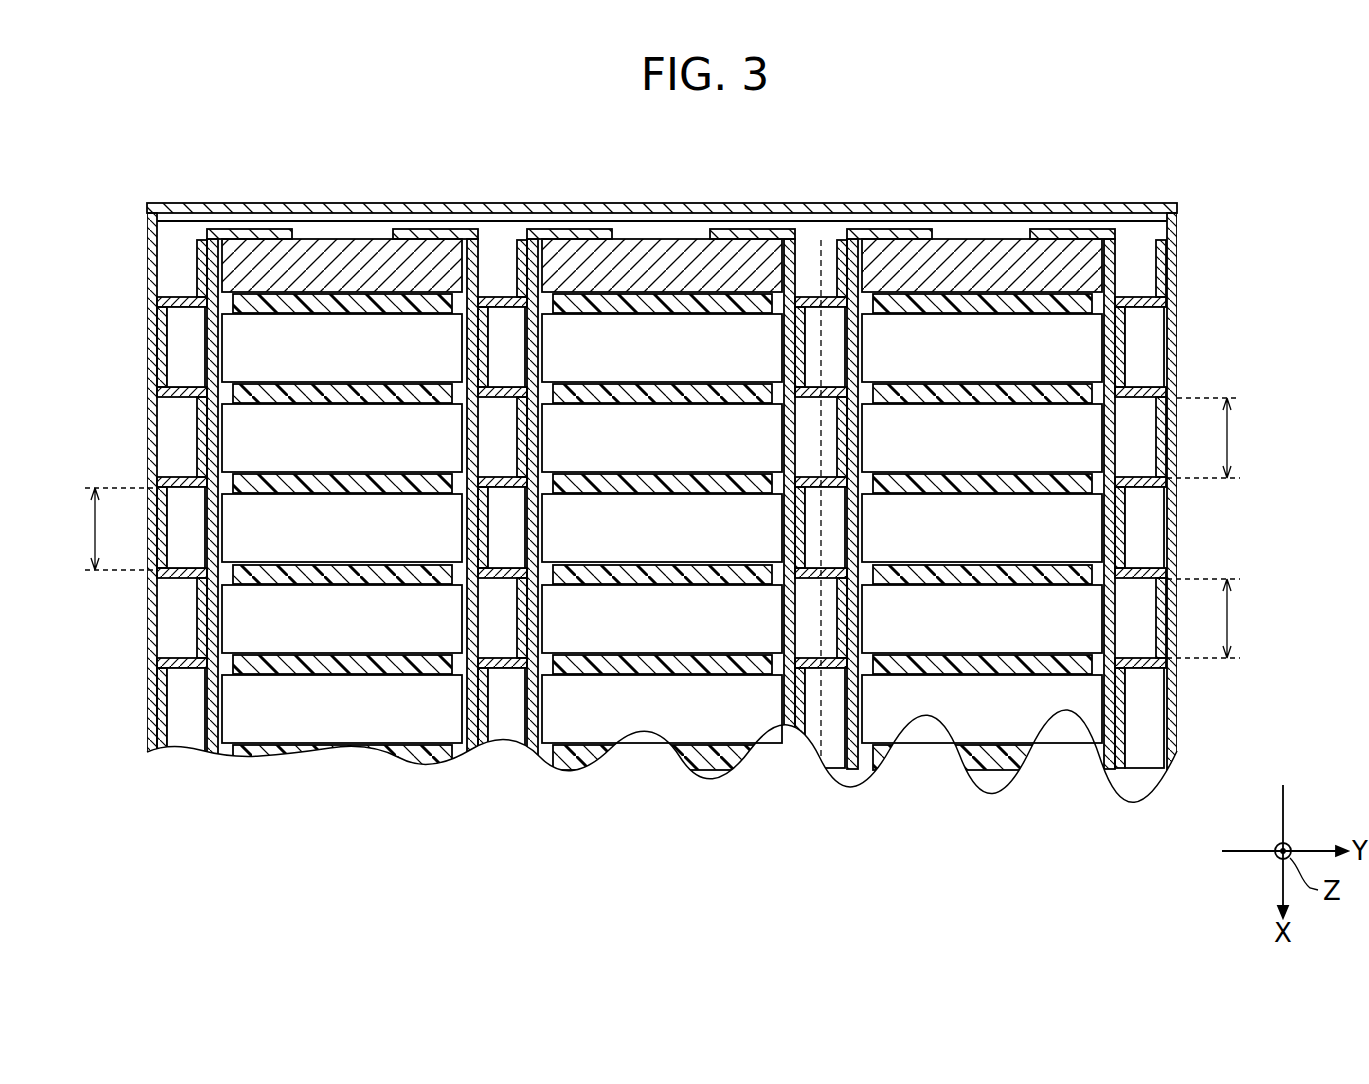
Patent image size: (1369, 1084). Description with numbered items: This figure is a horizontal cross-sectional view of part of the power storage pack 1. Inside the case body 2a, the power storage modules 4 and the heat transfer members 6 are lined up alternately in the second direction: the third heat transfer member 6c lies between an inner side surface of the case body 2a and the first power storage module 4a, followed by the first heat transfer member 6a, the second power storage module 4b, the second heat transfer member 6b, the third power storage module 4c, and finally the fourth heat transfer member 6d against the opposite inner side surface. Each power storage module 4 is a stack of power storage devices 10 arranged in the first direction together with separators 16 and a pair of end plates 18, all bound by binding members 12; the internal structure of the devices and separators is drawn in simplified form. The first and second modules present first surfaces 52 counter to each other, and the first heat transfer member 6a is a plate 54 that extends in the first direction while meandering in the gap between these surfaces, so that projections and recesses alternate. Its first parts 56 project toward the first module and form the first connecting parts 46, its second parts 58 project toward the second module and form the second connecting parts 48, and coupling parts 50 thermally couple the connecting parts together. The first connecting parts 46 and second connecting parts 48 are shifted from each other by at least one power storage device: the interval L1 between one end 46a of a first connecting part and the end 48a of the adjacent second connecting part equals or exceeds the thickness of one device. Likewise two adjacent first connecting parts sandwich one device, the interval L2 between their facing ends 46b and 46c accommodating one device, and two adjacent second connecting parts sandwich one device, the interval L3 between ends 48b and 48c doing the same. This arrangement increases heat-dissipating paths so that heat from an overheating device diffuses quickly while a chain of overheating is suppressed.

The power storage pack 1 is at (660, 522).
The case body 2a is at (1178, 738).
The power storage module 4 is at (721, 483).
The first power storage module 4a is at (338, 768).
The second power storage module 4b is at (837, 481).
The third power storage module 4c is at (978, 771).
The heat transfer member 6 is at (660, 487).
The first heat transfer member 6a is at (770, 545).
The second heat transfer member 6b is at (829, 500).
The third heat transfer member 6c is at (586, 487).
The fourth heat transfer member 6d is at (1158, 545).
The power storage device 10 is at (690, 330).
The binding member 12 is at (775, 242).
The separator 16 is at (665, 300).
The end plate 18 is at (630, 240).
The first connecting part 46 is at (536, 355).
The end of first connecting part 46a is at (1128, 495).
The end of first connecting part 46b is at (1140, 537).
The end of first connecting part 46c is at (1140, 693).
The second connecting part 48 is at (197, 433).
The end of second connecting part 48a is at (1143, 420).
The end of second connecting part 48b is at (197, 470).
The end of second connecting part 48c is at (197, 600).
The coupling part 50 is at (492, 318).
The first surface 52 is at (480, 240).
The plate 54 is at (836, 300).
The first part 56 is at (792, 290).
The second part 58 is at (835, 308).
The interval L1 is at (1214, 438).
The interval L2 is at (1214, 618).
The interval L3 is at (108, 529).